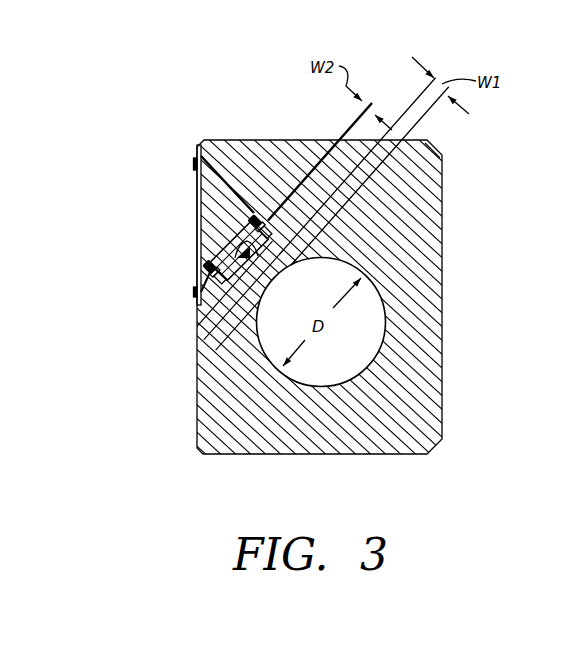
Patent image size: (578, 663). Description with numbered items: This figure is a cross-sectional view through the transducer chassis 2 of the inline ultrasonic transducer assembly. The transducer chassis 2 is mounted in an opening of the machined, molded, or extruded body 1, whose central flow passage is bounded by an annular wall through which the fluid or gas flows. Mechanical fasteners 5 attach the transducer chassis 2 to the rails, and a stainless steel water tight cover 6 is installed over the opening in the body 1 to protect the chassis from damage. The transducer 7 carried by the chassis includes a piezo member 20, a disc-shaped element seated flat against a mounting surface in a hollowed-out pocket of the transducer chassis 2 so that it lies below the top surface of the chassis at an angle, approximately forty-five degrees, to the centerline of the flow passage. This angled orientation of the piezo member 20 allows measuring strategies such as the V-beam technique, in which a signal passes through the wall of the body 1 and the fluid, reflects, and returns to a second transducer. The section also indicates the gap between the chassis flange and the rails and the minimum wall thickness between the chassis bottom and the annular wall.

The body 1 is at (197, 393).
The transducer chassis 2 is at (211, 261).
The mechanical fasteners 5 is at (194, 161).
The water tight cover 6 is at (195, 282).
The transducer 7 is at (219, 216).
The piezo member 20 is at (236, 238).